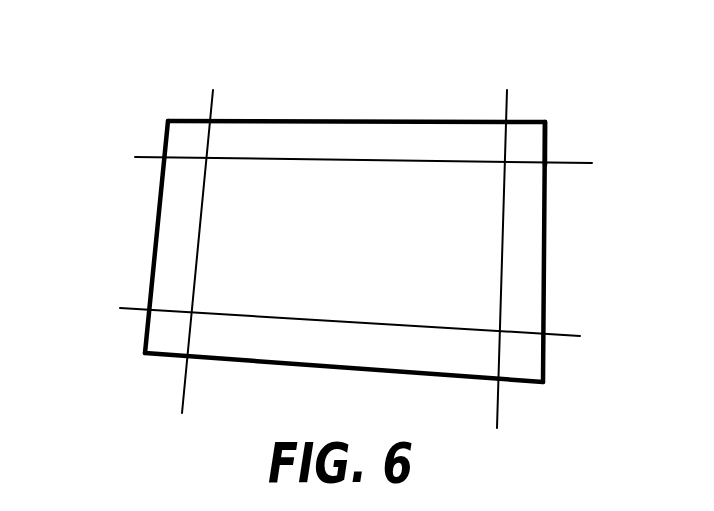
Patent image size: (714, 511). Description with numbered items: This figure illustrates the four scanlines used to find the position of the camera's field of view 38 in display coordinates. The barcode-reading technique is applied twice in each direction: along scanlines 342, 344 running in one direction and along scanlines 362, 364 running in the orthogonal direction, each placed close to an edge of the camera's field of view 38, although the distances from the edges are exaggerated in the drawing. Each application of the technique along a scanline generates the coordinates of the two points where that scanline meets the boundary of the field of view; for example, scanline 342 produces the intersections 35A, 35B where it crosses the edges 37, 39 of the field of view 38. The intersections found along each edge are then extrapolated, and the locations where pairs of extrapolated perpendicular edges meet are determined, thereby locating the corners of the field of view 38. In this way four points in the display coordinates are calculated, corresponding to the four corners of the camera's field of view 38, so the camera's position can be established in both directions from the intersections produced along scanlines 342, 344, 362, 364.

The intersection 35A is at (163, 156).
The intersection 35B is at (547, 162).
The edge of the field of view 37 is at (146, 327).
The camera's field of view 38 is at (545, 243).
The edge of the field of view 39 is at (545, 357).
The scanline 342 is at (143, 158).
The scanline 344 is at (133, 307).
The scanline 362 is at (213, 102).
The scanline 364 is at (507, 103).